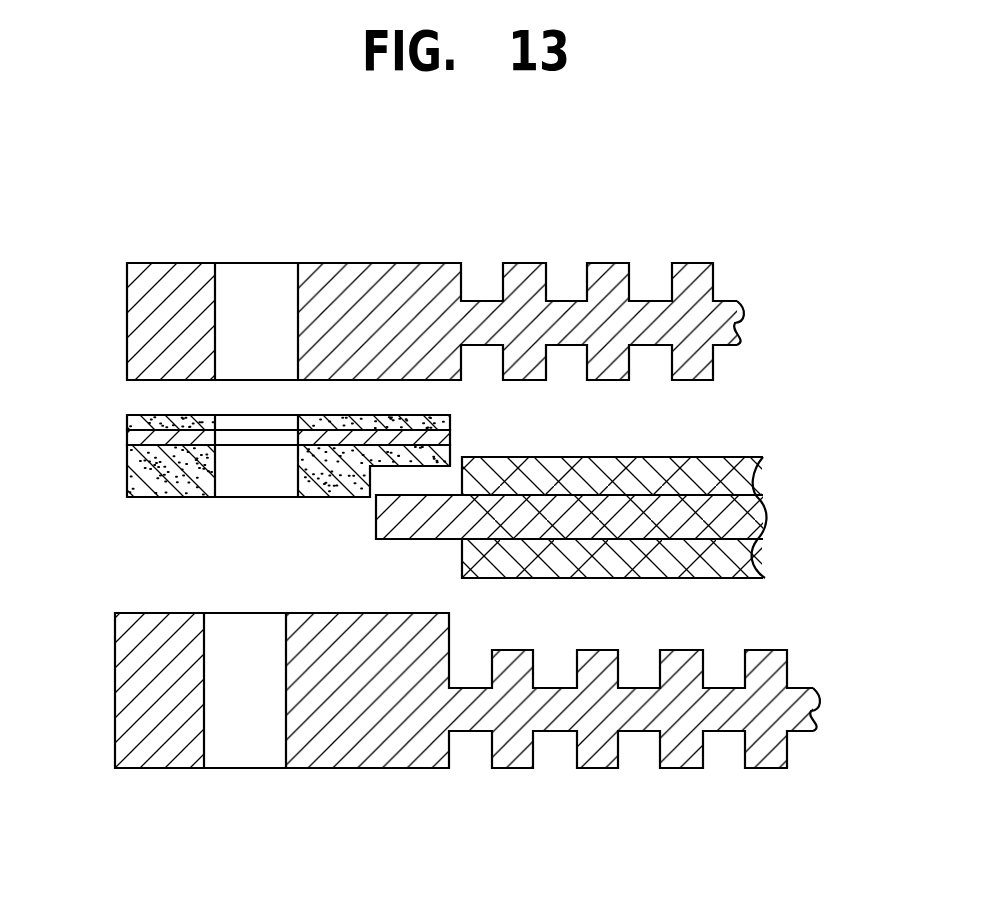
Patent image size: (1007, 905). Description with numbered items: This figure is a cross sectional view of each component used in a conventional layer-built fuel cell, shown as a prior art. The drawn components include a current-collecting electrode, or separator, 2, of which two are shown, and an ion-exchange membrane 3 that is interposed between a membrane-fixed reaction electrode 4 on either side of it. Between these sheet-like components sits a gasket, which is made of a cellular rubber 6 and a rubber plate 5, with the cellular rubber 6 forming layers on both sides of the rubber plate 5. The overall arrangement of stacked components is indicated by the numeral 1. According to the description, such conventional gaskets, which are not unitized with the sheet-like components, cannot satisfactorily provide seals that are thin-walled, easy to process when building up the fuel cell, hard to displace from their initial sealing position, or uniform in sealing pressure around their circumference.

The laminated assembly 1 is at (328, 243).
The current-collecting electrode (separator) 2 is at (746, 325).
The ion-exchange membrane 3 is at (745, 515).
The membrane-fixed reaction electrode 4 is at (755, 475).
The rubber plate 5 is at (127, 437).
The cellular rubber 6 is at (127, 425).